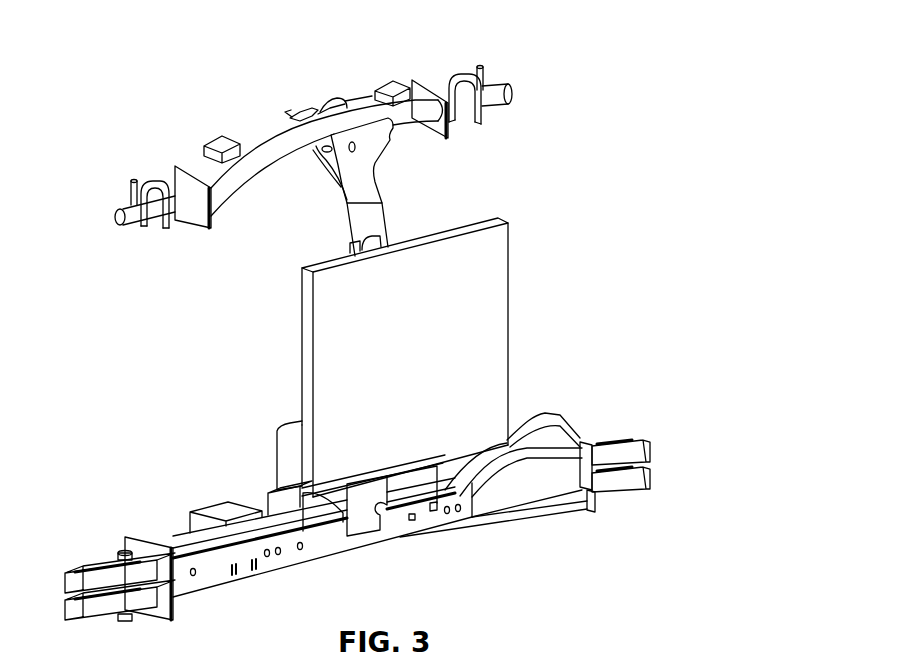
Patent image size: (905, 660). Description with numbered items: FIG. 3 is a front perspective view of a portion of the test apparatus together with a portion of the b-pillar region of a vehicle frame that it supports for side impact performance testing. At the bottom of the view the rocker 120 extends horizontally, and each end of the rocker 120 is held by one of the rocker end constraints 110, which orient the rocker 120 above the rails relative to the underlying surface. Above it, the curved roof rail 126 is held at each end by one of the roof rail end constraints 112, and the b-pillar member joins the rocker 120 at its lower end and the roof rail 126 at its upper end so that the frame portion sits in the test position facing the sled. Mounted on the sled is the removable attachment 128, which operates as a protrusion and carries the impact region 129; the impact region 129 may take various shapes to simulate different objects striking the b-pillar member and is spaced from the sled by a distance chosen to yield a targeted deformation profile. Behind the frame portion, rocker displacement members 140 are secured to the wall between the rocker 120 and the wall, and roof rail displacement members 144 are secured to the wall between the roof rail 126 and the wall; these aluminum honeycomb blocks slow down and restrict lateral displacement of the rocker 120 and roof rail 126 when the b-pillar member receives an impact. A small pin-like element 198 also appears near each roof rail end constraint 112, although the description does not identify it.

The rocker end constraints 110 is at (106, 554).
The roof rail end constraints 112 is at (122, 192).
The rocker 120 is at (287, 574).
The roof rail 126 is at (278, 137).
The attachment 128 is at (500, 303).
The impact region 129 is at (277, 438).
The rocker displacement members 140 is at (268, 497).
The roof rail displacement members 144 is at (220, 140).
The pin 198 is at (134, 180).